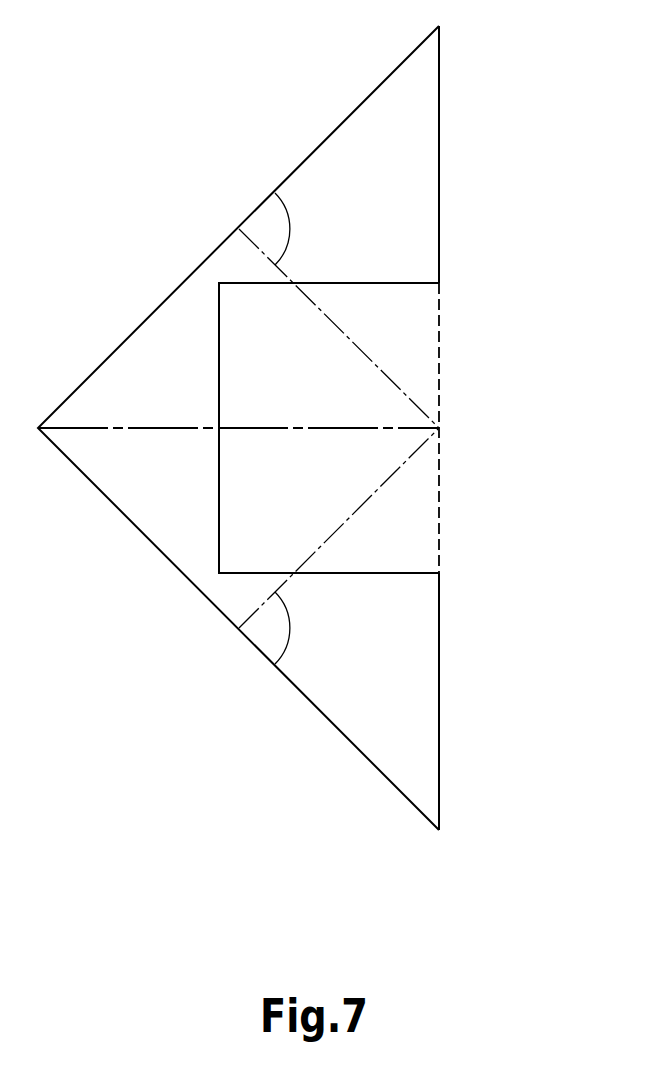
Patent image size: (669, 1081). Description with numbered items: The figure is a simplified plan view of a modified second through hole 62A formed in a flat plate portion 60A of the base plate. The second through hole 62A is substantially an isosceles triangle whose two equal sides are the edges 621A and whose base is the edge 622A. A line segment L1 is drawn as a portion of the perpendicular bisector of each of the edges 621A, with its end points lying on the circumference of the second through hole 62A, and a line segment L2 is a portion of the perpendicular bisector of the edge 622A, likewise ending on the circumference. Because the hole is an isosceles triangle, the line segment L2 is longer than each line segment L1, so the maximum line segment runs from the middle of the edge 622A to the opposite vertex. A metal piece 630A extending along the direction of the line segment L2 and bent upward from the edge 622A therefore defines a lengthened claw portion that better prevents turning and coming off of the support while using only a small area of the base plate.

The flat plate portion 60A is at (472, 152).
The second through hole 62A is at (168, 358).
The edges 621A is at (343, 127).
The edge 622A is at (440, 627).
The metal piece 630A is at (267, 502).
The line segment L1 is at (274, 192).
The line segment L2 is at (352, 427).